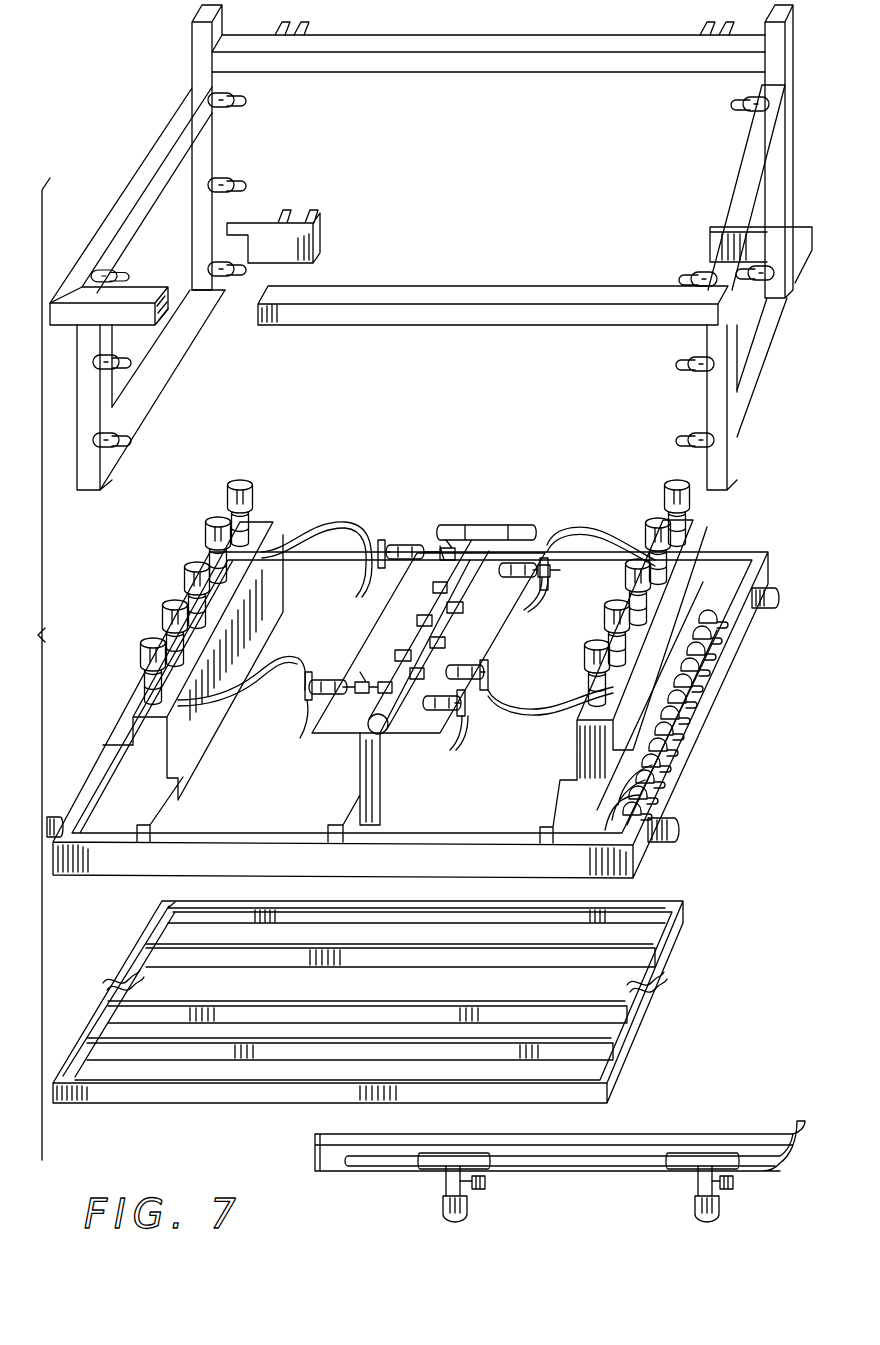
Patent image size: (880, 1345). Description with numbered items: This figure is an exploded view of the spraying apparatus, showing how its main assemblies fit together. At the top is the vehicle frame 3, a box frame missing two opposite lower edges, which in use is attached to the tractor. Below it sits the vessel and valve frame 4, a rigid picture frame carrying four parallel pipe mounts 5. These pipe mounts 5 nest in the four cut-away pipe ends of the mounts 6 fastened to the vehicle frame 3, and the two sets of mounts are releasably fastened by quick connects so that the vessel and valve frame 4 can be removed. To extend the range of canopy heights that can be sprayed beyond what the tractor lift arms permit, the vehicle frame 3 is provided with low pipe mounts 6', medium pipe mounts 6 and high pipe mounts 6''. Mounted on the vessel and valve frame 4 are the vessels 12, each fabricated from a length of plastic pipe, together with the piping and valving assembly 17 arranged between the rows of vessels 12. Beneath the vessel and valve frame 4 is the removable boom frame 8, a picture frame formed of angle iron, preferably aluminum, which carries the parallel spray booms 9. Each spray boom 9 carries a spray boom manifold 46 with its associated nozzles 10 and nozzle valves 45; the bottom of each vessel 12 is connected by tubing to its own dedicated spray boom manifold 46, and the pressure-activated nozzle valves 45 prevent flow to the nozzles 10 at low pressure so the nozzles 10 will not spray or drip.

The vehicle frame 3 is at (730, 466).
The vessel and valve frame 4 is at (140, 876).
The pipe mounts 5 is at (61, 815).
The medium pipe mounts 6 is at (403, 436).
The low pipe mounts 6' is at (403, 378).
The high pipe mounts 6'' is at (131, 259).
The boom frame 8 is at (620, 1056).
The spray booms 9 is at (347, 1003).
The nozzles 10 is at (443, 1199).
The vessels 12 is at (137, 647).
The manifold 17 is at (387, 697).
The nozzle valves 45 is at (487, 1182).
The spray boom manifold 46 is at (632, 1158).